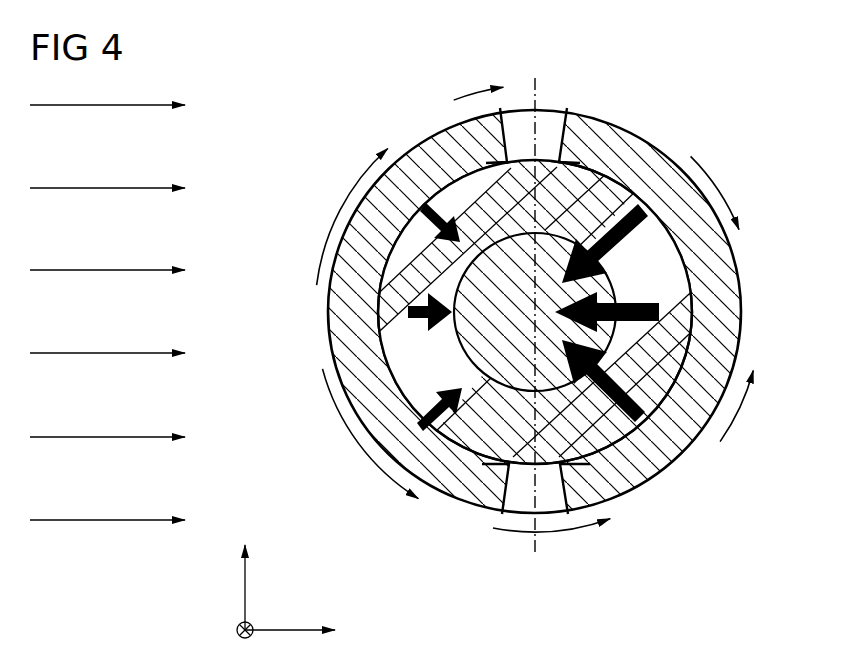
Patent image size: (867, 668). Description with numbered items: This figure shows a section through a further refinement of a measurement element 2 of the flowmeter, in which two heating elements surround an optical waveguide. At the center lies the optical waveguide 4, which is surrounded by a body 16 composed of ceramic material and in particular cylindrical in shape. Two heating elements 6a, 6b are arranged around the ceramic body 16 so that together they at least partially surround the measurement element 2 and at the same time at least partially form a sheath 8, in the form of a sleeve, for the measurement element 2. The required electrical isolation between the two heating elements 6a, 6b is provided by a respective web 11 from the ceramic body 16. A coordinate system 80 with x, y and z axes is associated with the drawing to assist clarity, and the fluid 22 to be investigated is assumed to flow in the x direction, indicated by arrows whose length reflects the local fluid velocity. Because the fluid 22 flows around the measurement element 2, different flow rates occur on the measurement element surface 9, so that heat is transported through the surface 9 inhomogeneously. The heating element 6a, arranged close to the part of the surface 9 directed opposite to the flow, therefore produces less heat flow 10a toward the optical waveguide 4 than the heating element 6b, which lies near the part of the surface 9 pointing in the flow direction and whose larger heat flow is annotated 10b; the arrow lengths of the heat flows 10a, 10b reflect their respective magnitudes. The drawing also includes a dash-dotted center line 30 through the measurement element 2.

The measurement element 2 is at (763, 116).
The optical waveguide 4 is at (546, 340).
The heating element 6a is at (428, 152).
The heating element 6b is at (650, 468).
The sheath 8 is at (523, 330).
The measurement element surface 9 is at (403, 150).
The heat flow 10a is at (425, 266).
The heat flow 10b is at (606, 225).
The web 11 is at (541, 163).
The body 16 is at (690, 292).
The fluid 22 is at (100, 524).
The axis 30 is at (531, 76).
The coordinate system 80 is at (295, 591).